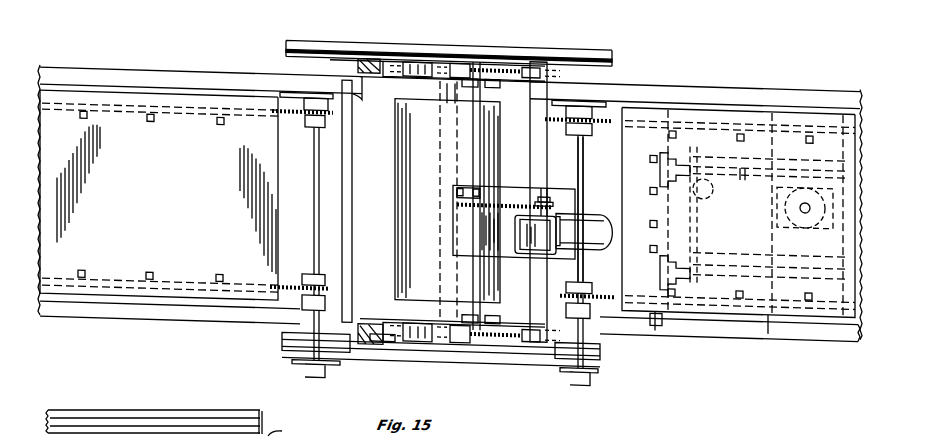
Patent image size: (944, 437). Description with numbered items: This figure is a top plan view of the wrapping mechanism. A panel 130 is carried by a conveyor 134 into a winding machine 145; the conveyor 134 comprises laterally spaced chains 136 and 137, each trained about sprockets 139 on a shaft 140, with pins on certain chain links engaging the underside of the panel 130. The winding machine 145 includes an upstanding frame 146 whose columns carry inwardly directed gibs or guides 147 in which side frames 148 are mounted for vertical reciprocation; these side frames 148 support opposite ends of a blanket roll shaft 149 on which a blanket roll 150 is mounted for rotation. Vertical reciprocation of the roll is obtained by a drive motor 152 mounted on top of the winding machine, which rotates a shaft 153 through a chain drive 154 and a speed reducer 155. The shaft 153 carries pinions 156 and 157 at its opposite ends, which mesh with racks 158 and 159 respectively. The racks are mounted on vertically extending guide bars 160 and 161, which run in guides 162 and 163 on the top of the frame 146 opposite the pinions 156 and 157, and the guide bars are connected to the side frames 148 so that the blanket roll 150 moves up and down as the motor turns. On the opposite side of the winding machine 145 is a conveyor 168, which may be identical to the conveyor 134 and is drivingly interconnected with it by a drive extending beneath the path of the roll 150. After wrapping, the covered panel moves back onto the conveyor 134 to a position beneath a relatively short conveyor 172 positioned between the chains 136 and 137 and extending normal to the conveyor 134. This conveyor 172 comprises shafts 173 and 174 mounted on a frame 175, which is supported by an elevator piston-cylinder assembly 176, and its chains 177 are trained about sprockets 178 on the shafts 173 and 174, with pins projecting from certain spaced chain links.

The panel 130 is at (790, 320).
The conveyor 134 is at (686, 316).
The chain 136 is at (668, 102).
The chain 137 is at (656, 322).
The sprockets 139 is at (602, 96).
The shaft 140 is at (584, 157).
The winding machine 145 is at (545, 51).
The upstanding frame 146 is at (378, 66).
The gibs or guides 147 is at (362, 345).
The side frames 148 is at (376, 348).
The blanket roll shaft 149 is at (447, 89).
The blanket roll 150 is at (403, 188).
The drive motor 152 is at (612, 232).
The shaft 153 is at (481, 92).
The chain drive 154 is at (505, 204).
The speed reducer 155 is at (528, 244).
The pinion 156 is at (498, 66).
The pinion 157 is at (487, 340).
The rack 158 is at (478, 66).
The rack 159 is at (462, 340).
The guide bar 160 is at (466, 66).
The guide bar 161 is at (448, 342).
The guide 162 is at (445, 87).
The guide 163 is at (437, 336).
The conveyor 168 is at (128, 305).
The conveyor 172 is at (706, 145).
The shaft 173 is at (746, 164).
The shaft 174 is at (738, 246).
The frame 175 is at (716, 189).
The elevator piston-cylinder assembly 176 is at (777, 204).
The chains 177 is at (655, 194).
The sprockets 178 is at (660, 158).